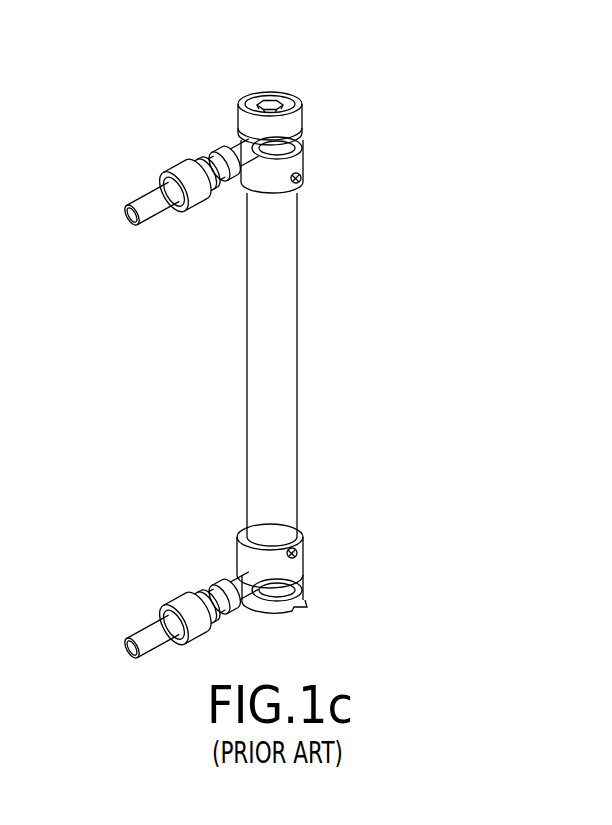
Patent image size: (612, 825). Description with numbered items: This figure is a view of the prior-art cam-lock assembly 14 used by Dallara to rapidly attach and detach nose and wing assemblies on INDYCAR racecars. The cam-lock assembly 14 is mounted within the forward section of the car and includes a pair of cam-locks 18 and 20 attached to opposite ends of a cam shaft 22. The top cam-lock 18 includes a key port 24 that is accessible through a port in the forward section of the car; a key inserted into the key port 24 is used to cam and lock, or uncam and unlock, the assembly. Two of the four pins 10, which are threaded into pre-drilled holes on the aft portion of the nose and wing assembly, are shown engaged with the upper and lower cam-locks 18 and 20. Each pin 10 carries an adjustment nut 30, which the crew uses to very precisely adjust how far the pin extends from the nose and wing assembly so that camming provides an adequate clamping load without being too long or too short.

The pin 10 is at (147, 126).
The cam-lock assembly 14 is at (422, 318).
The cam-lock 18 is at (338, 89).
The cam-lock 20 is at (338, 546).
The cam shaft 22 is at (290, 330).
The key port 24 is at (268, 102).
The adjustment nut 30 is at (190, 227).